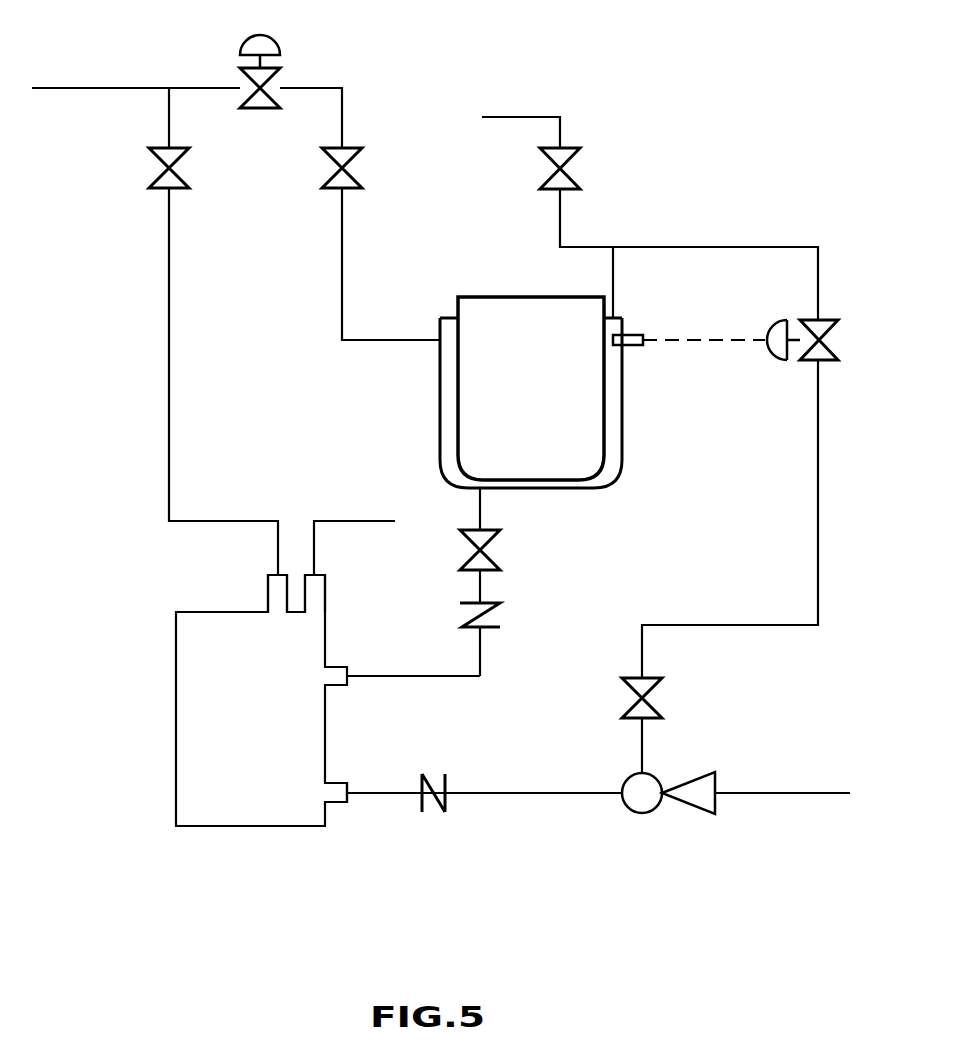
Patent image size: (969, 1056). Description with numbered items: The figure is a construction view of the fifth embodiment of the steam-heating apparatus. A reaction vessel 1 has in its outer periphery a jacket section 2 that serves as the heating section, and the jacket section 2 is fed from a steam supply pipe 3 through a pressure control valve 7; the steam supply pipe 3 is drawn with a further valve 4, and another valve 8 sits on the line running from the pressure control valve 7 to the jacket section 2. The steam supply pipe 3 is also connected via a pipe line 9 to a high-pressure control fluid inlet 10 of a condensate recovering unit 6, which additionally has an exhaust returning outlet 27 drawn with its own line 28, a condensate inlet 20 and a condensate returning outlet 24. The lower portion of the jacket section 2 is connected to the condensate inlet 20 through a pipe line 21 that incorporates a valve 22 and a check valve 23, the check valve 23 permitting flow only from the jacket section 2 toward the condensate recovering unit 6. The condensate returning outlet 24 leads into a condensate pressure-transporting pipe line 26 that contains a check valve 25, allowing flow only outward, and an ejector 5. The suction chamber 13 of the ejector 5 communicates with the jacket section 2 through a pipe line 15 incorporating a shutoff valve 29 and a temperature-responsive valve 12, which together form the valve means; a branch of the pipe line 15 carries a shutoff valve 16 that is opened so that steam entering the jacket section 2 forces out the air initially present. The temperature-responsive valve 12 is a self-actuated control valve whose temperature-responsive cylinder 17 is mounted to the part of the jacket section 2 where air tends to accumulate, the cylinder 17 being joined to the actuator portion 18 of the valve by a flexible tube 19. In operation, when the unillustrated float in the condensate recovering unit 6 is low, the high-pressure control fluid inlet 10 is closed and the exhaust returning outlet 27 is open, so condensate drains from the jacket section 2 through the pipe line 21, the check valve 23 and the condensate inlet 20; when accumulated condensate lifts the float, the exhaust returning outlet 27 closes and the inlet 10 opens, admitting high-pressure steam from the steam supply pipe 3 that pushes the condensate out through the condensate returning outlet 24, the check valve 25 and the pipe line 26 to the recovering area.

The reaction vessel 1 is at (475, 307).
The jacket section 2 is at (448, 407).
The steam supply pipe 3 is at (87, 86).
The valve 4 is at (162, 143).
The ejector 5 is at (703, 830).
The condensate recovering unit 6 is at (138, 720).
The pressure control valve 7 is at (240, 82).
The valve 8 is at (330, 157).
The pipe line 9 is at (168, 427).
The high-pressure control fluid inlet 10 is at (275, 590).
The temperature-responsive valve 12 is at (830, 332).
The suction chamber 13 is at (643, 813).
The pipe line 15 is at (695, 245).
The shutoff valve 16 is at (566, 145).
The temperature-responsive cylinder 17 is at (633, 350).
The actuator portion 18 is at (777, 358).
The flexible tube 19 is at (710, 338).
The condensate inlet 20 is at (335, 680).
The pipe line 21 is at (482, 513).
The valve 22 is at (488, 572).
The check valve 23 is at (487, 627).
The condensate returning outlet 24 is at (337, 797).
The check valve 25 is at (445, 800).
The condensate pressure-transporting pipe line 26 is at (520, 792).
The exhaust returning outlet 27 is at (320, 590).
The line 28 is at (353, 520).
The shutoff valve 29 is at (650, 705).